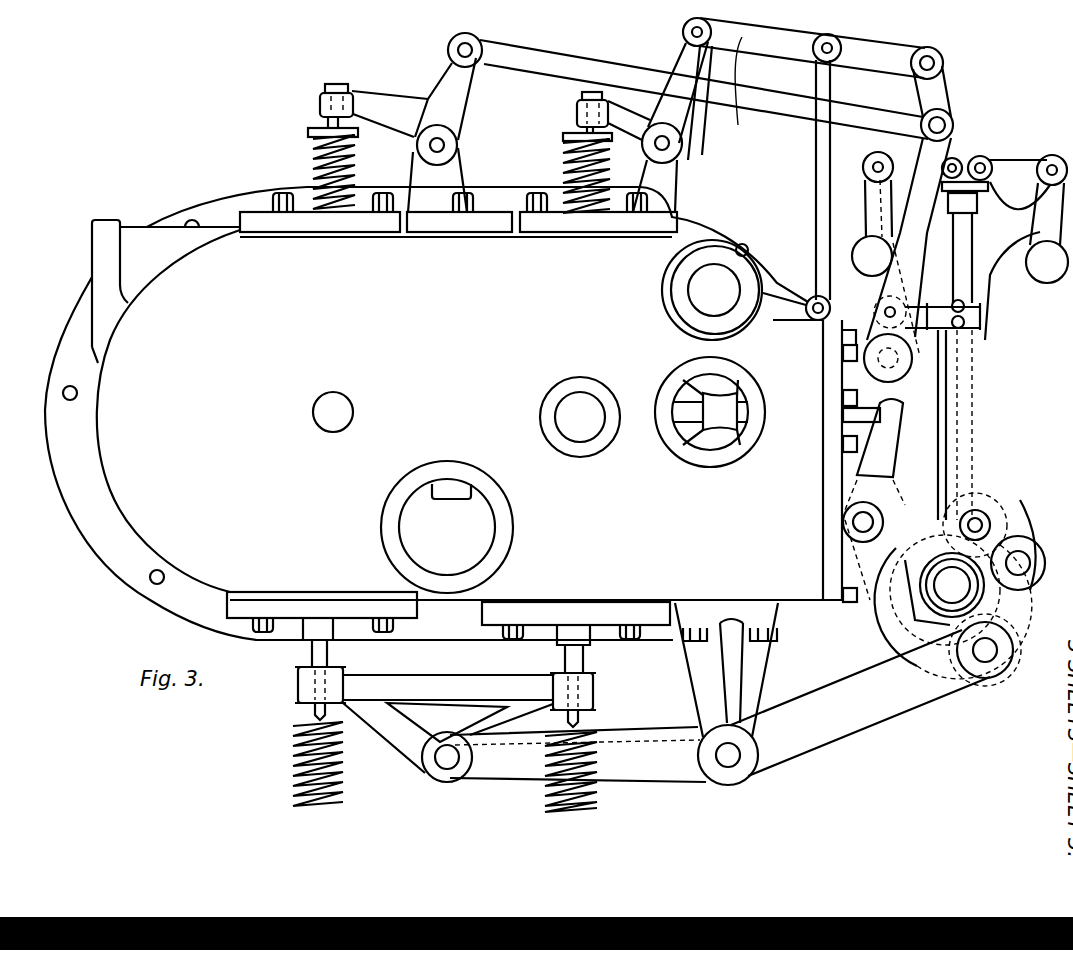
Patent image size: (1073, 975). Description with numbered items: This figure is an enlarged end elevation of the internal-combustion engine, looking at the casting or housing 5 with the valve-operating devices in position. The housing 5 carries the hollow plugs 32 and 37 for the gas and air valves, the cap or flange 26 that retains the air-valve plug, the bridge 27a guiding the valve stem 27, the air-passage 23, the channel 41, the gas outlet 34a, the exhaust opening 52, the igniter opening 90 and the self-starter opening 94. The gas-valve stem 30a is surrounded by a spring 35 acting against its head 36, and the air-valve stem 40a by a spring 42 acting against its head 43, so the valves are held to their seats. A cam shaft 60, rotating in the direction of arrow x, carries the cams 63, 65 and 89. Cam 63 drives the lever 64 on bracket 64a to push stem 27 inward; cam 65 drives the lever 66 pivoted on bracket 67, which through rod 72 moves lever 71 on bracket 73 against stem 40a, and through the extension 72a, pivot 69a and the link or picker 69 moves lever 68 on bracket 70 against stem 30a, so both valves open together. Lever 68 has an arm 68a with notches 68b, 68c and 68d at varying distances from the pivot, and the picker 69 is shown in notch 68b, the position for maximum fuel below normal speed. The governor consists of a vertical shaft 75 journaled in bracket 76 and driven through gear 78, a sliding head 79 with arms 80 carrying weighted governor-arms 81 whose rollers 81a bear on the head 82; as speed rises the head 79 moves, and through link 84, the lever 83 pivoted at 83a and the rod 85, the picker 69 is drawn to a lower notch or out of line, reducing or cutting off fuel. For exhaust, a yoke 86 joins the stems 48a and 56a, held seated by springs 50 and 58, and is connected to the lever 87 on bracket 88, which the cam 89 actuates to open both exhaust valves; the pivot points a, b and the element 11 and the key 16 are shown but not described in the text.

The casting or housing 5 is at (796, 296).
The pivot 11 is at (930, 527).
The key 16 is at (450, 498).
The air-passage 23 is at (712, 432).
The cap or flange 26 is at (823, 445).
The valve stem 27 is at (681, 420).
The bridge 27a is at (724, 411).
The valve stem 30a is at (563, 140).
The hollow plug 32 is at (635, 240).
The outlet 34a is at (665, 312).
The spring 35 is at (563, 178).
The projection or head 36 is at (578, 132).
The hollow plug 37 is at (290, 222).
The valve stem 40a is at (313, 155).
The channel 41 is at (105, 263).
The spring 42 is at (313, 165).
The projection or head 43 is at (308, 130).
The valve stem 48a is at (586, 660).
The spring 50 is at (590, 728).
The opening 52 is at (447, 527).
The valve stem 56a is at (322, 655).
The spring 58 is at (345, 775).
The shaft 60 is at (952, 585).
The cam 63 is at (900, 575).
The lever 64 is at (880, 438).
The bracket 64a is at (930, 470).
The cam 65 is at (930, 568).
The lever 66 is at (907, 290).
The bracket 67 is at (843, 340).
The lever 68 is at (690, 120).
The arm or extension 68a is at (722, 42).
The notch 68b is at (755, 30).
The notch 68c is at (748, 45).
The notch 68d is at (765, 128).
The link, rod, or picker 69 is at (812, 36).
The pivot 69a is at (942, 58).
The bracket 70 is at (658, 127).
The lever 71 is at (417, 99).
The rod 72 is at (538, 62).
The extension 72a is at (941, 96).
The bracket 73 is at (437, 180).
The vertical shaft 75 is at (968, 215).
The bracket or support 76 is at (978, 345).
The gear 78 is at (1013, 627).
The head 79 is at (1006, 286).
The arms 80 is at (964, 212).
The governor-arms 81 is at (866, 215).
The rollers 81a is at (982, 160).
The head 82 is at (988, 187).
The lever 83 is at (826, 300).
The pivot 83a is at (905, 292).
The link 84 is at (1000, 316).
The rod 85 is at (831, 156).
The yoke 86 is at (450, 668).
The lever 87 is at (720, 706).
The bracket 88 is at (752, 760).
The cam 89 is at (900, 590).
The opening 90 is at (588, 400).
The opening 94 is at (354, 414).
The pivot a is at (1030, 585).
The pivot b is at (992, 515).
The arrow x is at (954, 573).